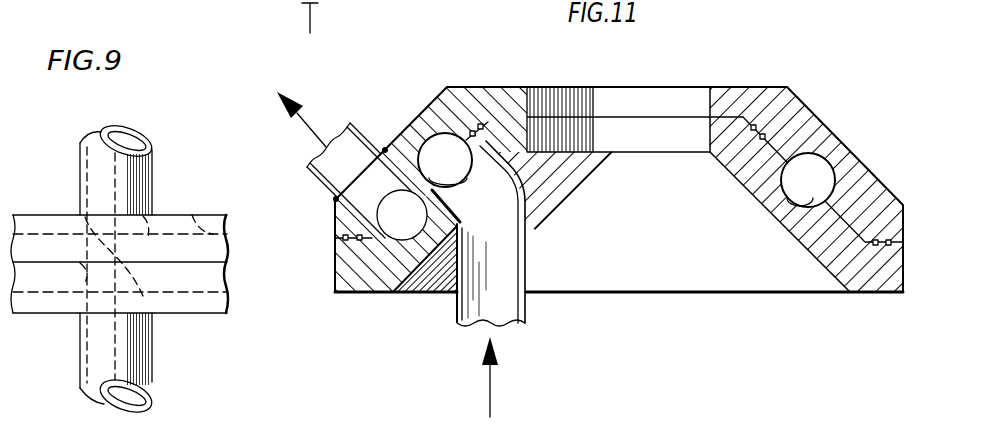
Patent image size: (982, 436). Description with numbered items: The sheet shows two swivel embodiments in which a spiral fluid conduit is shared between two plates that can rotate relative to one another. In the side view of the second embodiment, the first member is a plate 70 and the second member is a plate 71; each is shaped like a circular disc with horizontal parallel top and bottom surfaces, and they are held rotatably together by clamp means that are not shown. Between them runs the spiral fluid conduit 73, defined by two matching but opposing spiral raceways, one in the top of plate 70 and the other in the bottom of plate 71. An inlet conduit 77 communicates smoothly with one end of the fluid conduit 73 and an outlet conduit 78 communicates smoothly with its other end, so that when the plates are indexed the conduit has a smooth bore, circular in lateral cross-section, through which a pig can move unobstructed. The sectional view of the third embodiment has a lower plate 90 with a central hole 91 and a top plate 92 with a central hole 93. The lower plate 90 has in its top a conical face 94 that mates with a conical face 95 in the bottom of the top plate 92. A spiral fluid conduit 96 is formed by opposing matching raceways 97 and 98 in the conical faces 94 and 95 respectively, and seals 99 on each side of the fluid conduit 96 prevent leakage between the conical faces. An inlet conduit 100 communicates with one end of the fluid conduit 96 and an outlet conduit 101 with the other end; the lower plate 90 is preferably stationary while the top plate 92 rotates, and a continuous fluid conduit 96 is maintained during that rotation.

In FIG. 9, the plate 70 is at (208, 313).
In FIG. 9, the plate 71 is at (190, 215).
In FIG. 9, the spiral fluid conduit 73 is at (225, 262).
In FIG. 9, the inlet conduit 77 is at (80, 370).
In FIG. 9, the outlet conduit 78 is at (154, 152).
In FIG. 11, the lower plate 90 is at (365, 293).
In FIG. 11, the central hole 91 is at (668, 135).
In FIG. 11, the top plate 92 is at (728, 87).
In FIG. 11, the central hole 93 is at (620, 87).
In FIG. 11, the conical face 94 is at (375, 240).
In FIG. 11, the conical face 95 is at (372, 250).
In FIG. 11, the spiral fluid conduit 96 is at (432, 156).
In FIG. 11, the raceway 97 is at (470, 180).
In FIG. 11, the raceway 98 is at (446, 133).
In FIG. 11, the seals 99 is at (345, 241).
In FIG. 11, the inlet conduit 100 is at (527, 298).
In FIG. 11, the outlet conduit 101 is at (352, 122).